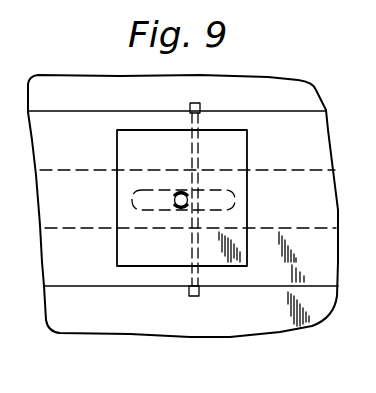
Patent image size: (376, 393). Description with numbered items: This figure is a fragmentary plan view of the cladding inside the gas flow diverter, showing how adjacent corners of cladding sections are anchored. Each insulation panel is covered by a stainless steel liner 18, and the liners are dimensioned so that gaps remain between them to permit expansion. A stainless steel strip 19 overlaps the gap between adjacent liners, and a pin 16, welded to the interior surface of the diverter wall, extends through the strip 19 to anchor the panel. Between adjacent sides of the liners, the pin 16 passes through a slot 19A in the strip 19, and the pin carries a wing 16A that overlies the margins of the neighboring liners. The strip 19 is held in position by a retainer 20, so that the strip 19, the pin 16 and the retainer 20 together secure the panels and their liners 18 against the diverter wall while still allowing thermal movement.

The pin 16 is at (176, 206).
The wing 16A is at (205, 108).
The stainless steel liner 18 is at (87, 78).
The strip 19 is at (291, 112).
The slot 19A is at (229, 200).
The retainer 20 is at (232, 267).